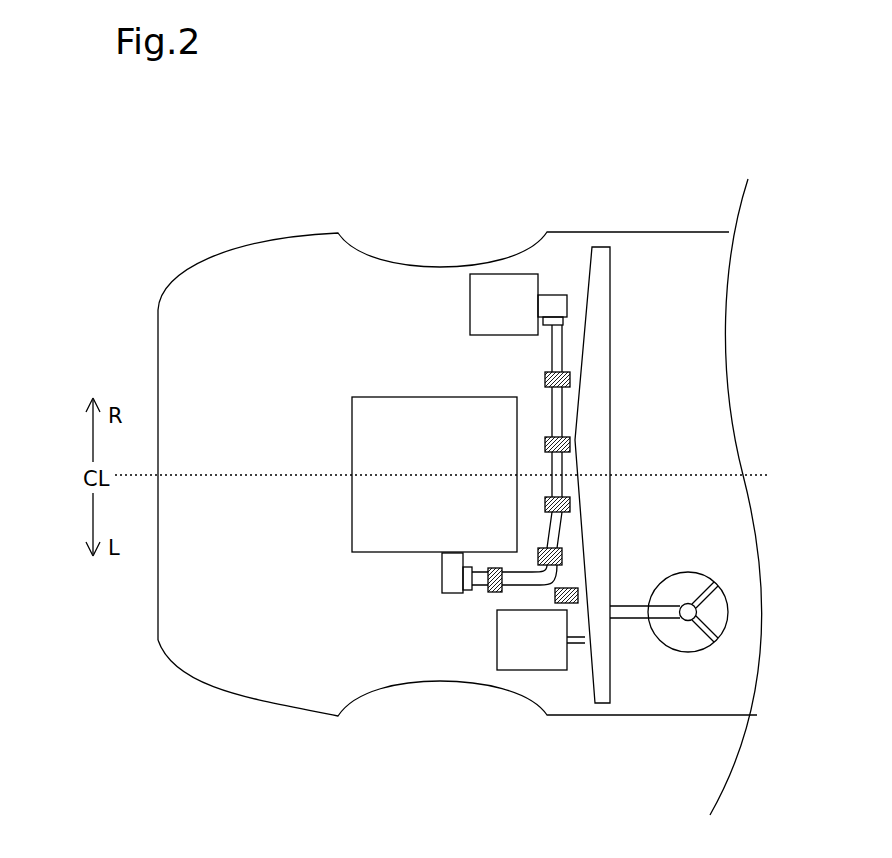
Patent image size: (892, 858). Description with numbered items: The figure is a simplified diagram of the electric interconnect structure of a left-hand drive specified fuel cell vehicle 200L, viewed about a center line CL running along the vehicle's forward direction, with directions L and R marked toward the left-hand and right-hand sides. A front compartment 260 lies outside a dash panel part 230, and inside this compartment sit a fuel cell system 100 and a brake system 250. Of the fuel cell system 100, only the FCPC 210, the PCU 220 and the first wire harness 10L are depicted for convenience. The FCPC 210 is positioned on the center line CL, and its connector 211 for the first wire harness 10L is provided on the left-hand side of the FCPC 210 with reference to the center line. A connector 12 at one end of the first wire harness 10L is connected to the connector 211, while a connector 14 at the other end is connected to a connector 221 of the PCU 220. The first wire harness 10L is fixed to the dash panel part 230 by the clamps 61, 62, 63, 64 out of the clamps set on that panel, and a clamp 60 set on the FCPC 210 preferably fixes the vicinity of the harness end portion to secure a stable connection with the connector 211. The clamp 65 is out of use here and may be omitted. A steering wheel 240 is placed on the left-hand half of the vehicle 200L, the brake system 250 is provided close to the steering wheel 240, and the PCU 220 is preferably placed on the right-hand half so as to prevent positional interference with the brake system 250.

The left-hand drive specified fuel cell vehicle 200L is at (226, 225).
The fuel cell system 100 is at (339, 326).
The FCPC 210 is at (378, 397).
The PCU 220 is at (470, 304).
The connector 221 is at (556, 295).
The dash panel part 230 is at (612, 293).
The connector 14 is at (568, 318).
The clamp 64 is at (571, 378).
The clamp 63 is at (571, 443).
The clamp 62 is at (572, 503).
The clamp 61 is at (563, 553).
The first wire harness 10L is at (565, 577).
The clamp 60 is at (490, 593).
The connector 211 is at (442, 578).
The connector 12 is at (462, 592).
The brake system 250 is at (497, 652).
The clamp 65 is at (576, 602).
The steering wheel 240 is at (683, 653).
The front compartment 260 is at (258, 467).